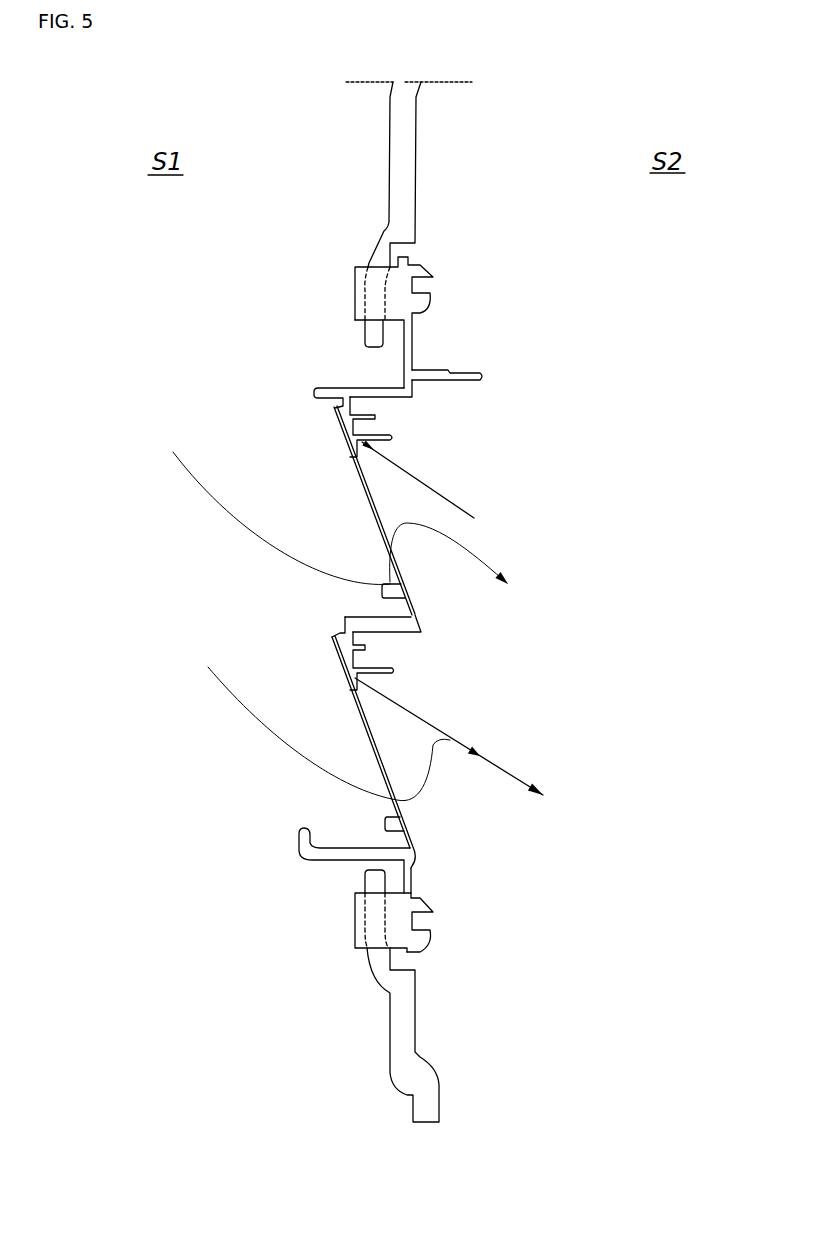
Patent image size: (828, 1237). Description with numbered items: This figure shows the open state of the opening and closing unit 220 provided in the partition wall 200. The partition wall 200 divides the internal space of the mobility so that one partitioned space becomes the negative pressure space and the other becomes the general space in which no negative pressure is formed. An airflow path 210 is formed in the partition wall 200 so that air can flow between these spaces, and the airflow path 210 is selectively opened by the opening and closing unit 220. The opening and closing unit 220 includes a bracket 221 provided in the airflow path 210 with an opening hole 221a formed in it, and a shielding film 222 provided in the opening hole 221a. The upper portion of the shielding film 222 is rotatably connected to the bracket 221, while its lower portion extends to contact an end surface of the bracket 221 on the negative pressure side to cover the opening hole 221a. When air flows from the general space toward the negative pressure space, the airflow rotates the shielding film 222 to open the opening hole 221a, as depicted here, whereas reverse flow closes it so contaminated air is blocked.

The partition wall 200 is at (403, 185).
The airflow path 210 is at (372, 347).
The opening and closing unit 220 is at (525, 539).
The bracket 221 is at (415, 353).
The opening hole 221a is at (355, 480).
The shielding film 222 is at (443, 492).